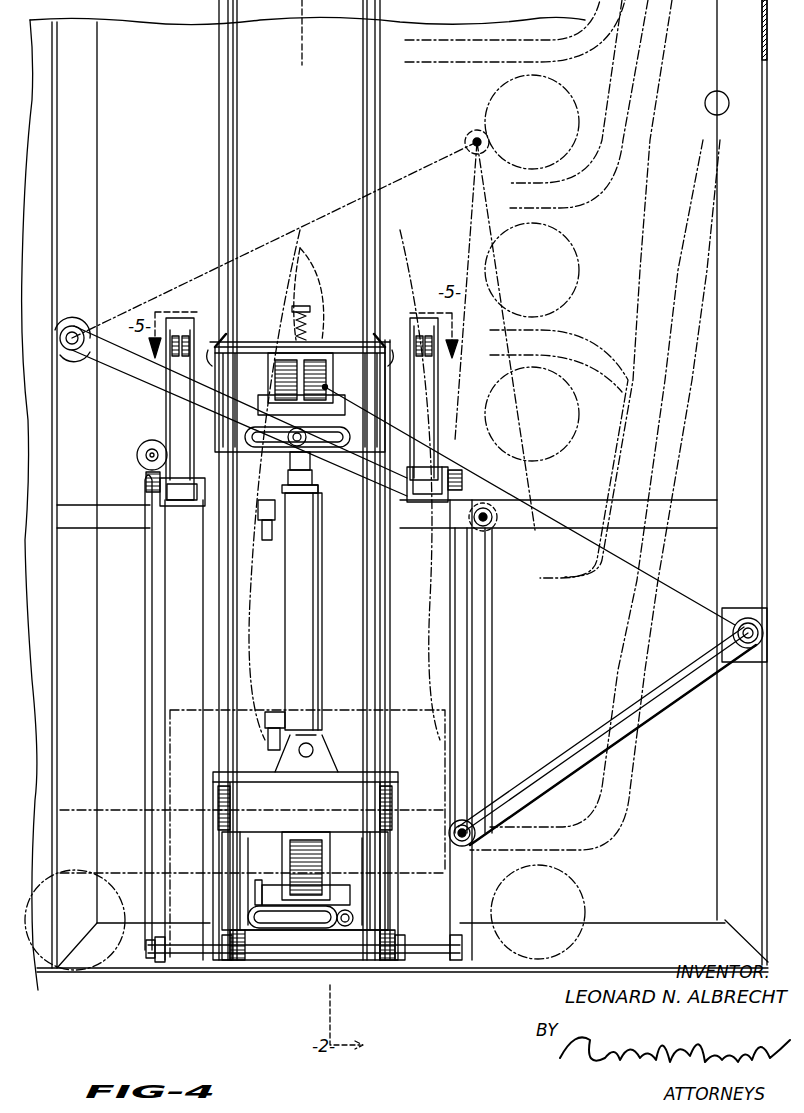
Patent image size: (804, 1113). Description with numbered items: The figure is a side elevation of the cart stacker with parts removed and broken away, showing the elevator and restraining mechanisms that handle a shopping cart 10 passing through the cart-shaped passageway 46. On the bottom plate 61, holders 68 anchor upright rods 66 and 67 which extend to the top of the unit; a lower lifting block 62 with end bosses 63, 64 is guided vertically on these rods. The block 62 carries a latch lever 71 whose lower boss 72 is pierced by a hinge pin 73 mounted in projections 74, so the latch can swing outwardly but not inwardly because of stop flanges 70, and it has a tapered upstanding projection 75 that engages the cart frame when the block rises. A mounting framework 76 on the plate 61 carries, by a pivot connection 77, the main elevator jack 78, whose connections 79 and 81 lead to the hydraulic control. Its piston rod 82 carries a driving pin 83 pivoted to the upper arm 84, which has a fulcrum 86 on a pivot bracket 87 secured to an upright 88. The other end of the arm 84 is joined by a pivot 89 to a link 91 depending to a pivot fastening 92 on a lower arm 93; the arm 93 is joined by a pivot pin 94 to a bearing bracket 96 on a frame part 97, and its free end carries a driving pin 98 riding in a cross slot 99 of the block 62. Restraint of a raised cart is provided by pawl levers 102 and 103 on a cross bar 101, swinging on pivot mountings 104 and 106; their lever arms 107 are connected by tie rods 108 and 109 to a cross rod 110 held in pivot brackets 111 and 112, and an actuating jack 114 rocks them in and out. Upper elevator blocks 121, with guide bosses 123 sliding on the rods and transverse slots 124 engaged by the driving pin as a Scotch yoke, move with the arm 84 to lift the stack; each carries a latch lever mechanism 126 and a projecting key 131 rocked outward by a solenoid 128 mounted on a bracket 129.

The shopping cart 10 is at (708, 96).
The passageway 46 is at (762, 65).
The bottom plate 61 is at (115, 970).
The lower lifting block 62 is at (252, 960).
The end boss 63 is at (228, 962).
The end boss 64 is at (400, 962).
The upright rod 66 is at (237, 142).
The upright rod 67 is at (363, 124).
The holder 68 is at (238, 962).
The stop flange 70 is at (260, 832).
The latch lever 71 is at (328, 826).
The lower boss 72 is at (316, 900).
The hinge pin 73 is at (356, 906).
The projection 74 is at (268, 880).
The upstanding projection 75 is at (296, 830).
The mounting framework 76 is at (352, 770).
The pivot connection 77 is at (314, 752).
The main elevator jack 78 is at (323, 670).
The connection 79 is at (270, 740).
The connection 81 is at (266, 540).
The piston rod 82 is at (312, 470).
The driving pin 83 is at (292, 452).
The upper arm 84 is at (130, 380).
The fulcrum pivot connection 86 is at (72, 326).
The pivot bracket 87 is at (72, 368).
The upright 88 is at (52, 244).
The pivot 89 is at (490, 530).
The link 91 is at (492, 646).
The pivot fastening 92 is at (470, 815).
The lower arm 93 is at (664, 705).
The pivot pin 94 is at (748, 662).
The bearing bracket 96 is at (746, 618).
The frame part 97 is at (728, 772).
The driving pin 98 is at (354, 930).
The cross slot 99 is at (294, 922).
The cross bar 101 is at (104, 540).
The pawl lever 102 is at (182, 322).
The pawl lever 103 is at (430, 316).
The pivot mounting 104 is at (178, 508).
The pivot mounting 106 is at (445, 502).
The lever arm 107 is at (146, 482).
The tie rod 108 is at (145, 660).
The tie rod 109 is at (470, 628).
The cross rod 110 is at (188, 962).
The pivot bracket 111 is at (160, 962).
The pivot bracket 112 is at (456, 962).
The actuating jack 114 is at (146, 442).
The upper elevator block 121 is at (240, 360).
The guide boss 123 is at (240, 347).
The transverse slot 124 is at (258, 448).
The latch lever mechanism 126 is at (322, 348).
The solenoid 128 is at (304, 330).
The bracket 129 is at (274, 350).
The projecting key 131 is at (292, 344).